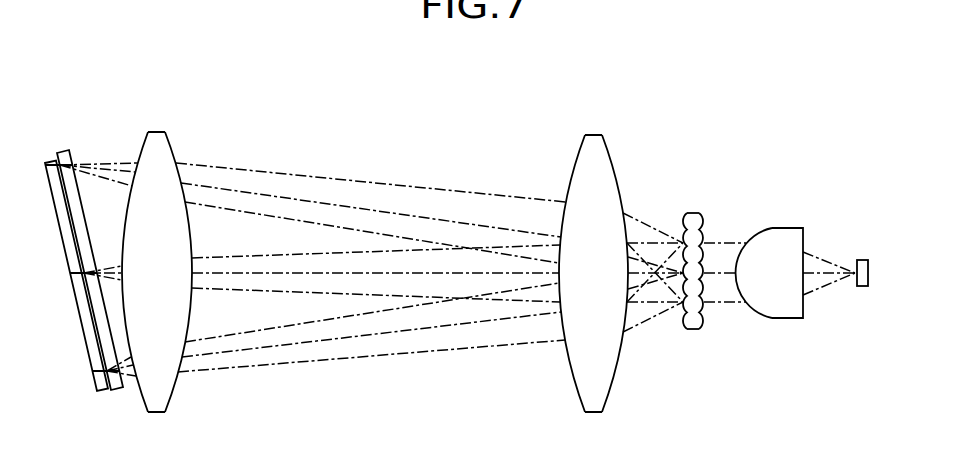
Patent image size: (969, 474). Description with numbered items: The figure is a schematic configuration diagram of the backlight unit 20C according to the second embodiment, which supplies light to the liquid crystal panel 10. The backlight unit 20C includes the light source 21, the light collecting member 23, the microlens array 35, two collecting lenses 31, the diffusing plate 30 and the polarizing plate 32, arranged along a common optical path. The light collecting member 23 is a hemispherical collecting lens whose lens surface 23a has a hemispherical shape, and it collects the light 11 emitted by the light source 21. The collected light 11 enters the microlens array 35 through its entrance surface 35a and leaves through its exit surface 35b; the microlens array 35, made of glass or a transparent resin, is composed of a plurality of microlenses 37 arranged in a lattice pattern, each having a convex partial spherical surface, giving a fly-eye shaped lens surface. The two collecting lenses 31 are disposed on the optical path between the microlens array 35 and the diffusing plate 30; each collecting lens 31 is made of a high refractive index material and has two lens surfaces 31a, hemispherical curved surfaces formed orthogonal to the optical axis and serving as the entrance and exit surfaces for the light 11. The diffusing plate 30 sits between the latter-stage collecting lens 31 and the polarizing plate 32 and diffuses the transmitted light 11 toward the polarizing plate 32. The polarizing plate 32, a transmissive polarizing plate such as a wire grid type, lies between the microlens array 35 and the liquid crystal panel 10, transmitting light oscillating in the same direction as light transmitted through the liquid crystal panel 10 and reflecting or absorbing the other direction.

The backlight unit 20C is at (468, 98).
The liquid crystal panel 10 is at (69, 265).
The diffusing plate 30 is at (63, 150).
The polarizing plate 32 is at (51, 160).
The collecting lens 31 is at (374, 244).
The lens surface 31a is at (137, 150).
The microlens array 35 is at (697, 262).
The entrance surface 35a is at (707, 225).
The exit surface 35b is at (679, 225).
The microlens 37 is at (684, 328).
The light 11 is at (737, 242).
The light collecting member 23 is at (777, 277).
The lens surface 23a is at (739, 293).
The light source 21 is at (875, 270).